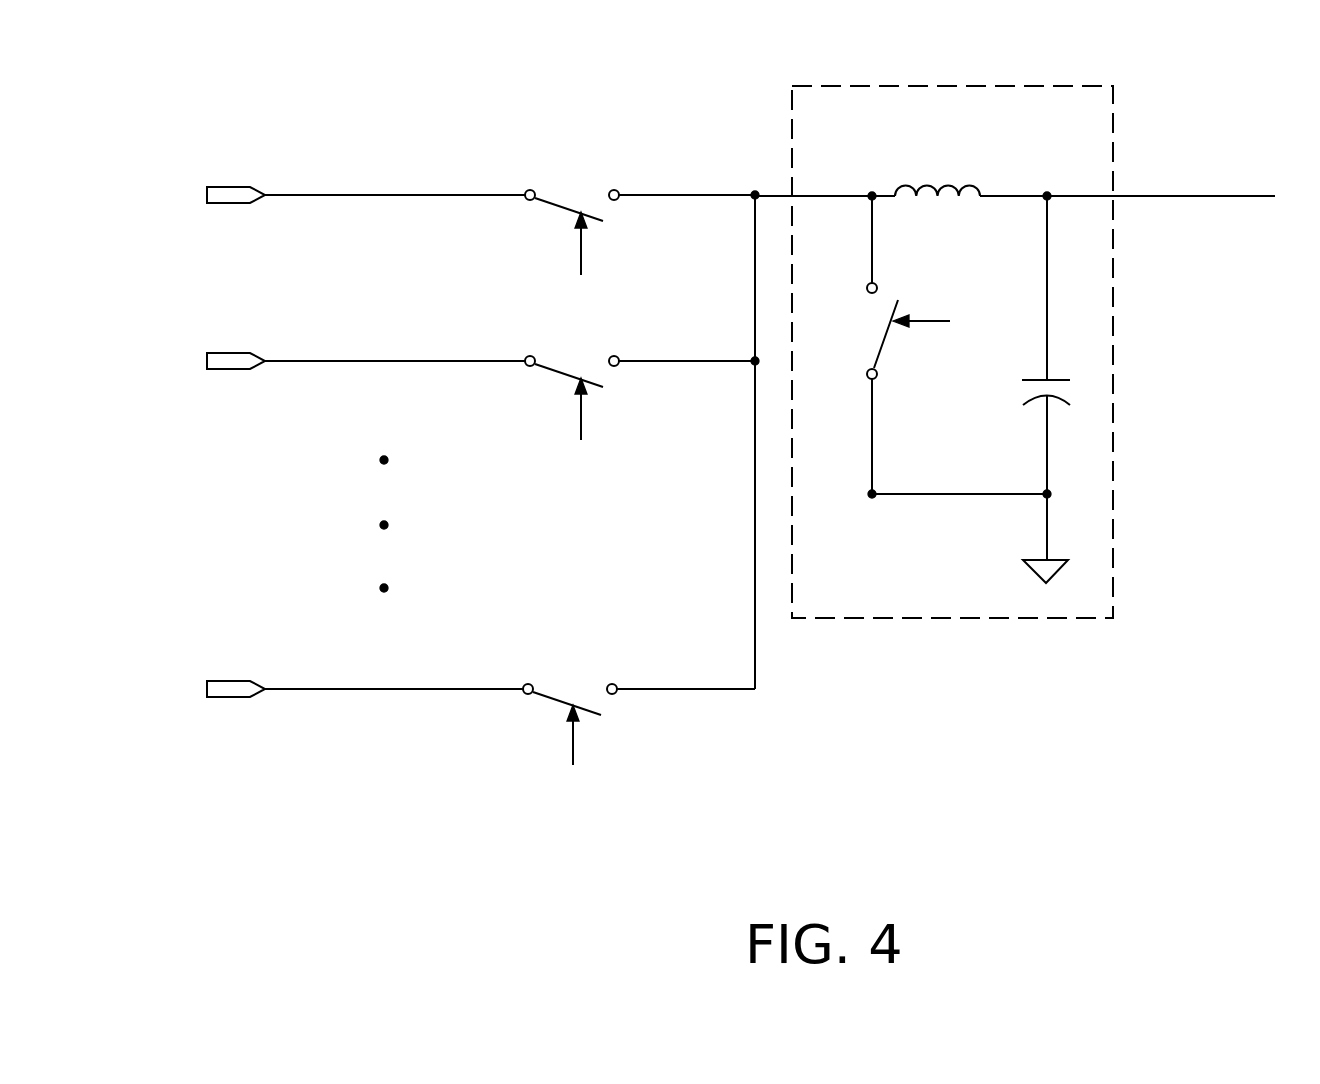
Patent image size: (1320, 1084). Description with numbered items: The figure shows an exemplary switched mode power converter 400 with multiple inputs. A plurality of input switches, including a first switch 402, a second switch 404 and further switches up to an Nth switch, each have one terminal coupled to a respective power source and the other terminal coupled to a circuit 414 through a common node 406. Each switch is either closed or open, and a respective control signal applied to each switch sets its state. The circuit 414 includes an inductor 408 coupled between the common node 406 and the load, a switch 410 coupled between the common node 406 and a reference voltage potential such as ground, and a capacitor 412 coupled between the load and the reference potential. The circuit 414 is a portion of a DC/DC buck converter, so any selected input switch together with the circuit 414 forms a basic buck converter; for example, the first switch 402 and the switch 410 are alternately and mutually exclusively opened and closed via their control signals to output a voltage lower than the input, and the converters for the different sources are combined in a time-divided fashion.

The switched mode power converter 400 is at (225, 125).
The switch SW1 402 is at (535, 205).
The switch SW2 404 is at (535, 371).
The common node 406 is at (753, 192).
The inductor 408 is at (952, 182).
The switch SW0 410 is at (882, 357).
The capacitor 412 is at (1035, 380).
The circuit 414 is at (940, 620).